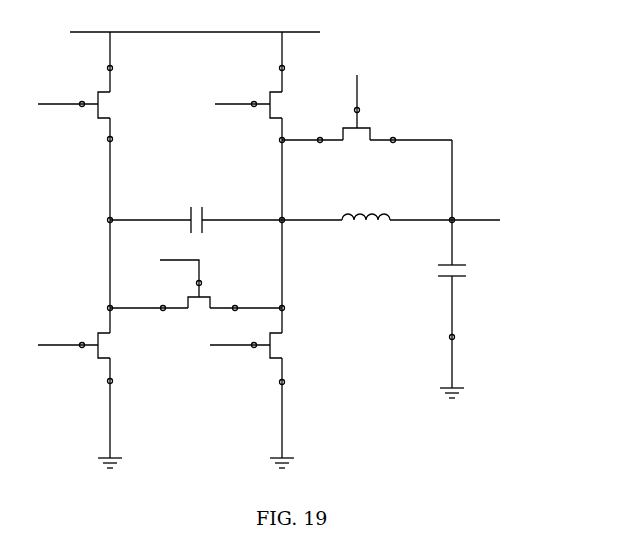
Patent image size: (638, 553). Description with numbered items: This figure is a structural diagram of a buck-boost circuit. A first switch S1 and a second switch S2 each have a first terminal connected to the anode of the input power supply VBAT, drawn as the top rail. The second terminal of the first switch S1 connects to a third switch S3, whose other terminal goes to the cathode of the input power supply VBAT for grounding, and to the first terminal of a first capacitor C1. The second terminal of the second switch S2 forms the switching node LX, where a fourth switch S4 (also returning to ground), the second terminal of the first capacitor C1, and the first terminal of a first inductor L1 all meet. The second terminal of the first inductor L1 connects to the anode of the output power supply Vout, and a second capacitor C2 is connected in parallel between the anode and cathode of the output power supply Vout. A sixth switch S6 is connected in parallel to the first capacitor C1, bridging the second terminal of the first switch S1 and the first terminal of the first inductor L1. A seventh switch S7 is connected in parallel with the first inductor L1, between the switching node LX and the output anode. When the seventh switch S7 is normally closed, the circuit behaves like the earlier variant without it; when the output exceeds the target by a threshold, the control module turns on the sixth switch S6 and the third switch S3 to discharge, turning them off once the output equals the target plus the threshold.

The first switch S1 is at (74, 87).
The second switch S2 is at (245, 87).
The third switch S3 is at (80, 397).
The fourth switch S4 is at (252, 397).
The sixth switch S6 is at (196, 275).
The seventh switch S7 is at (367, 97).
The first capacitor C1 is at (193, 208).
The second capacitor C2 is at (465, 309).
The first inductor L1 is at (397, 235).
The switching node LX is at (226, 210).
The input power supply VBAT is at (195, 18).
The output power supply Vout is at (475, 209).